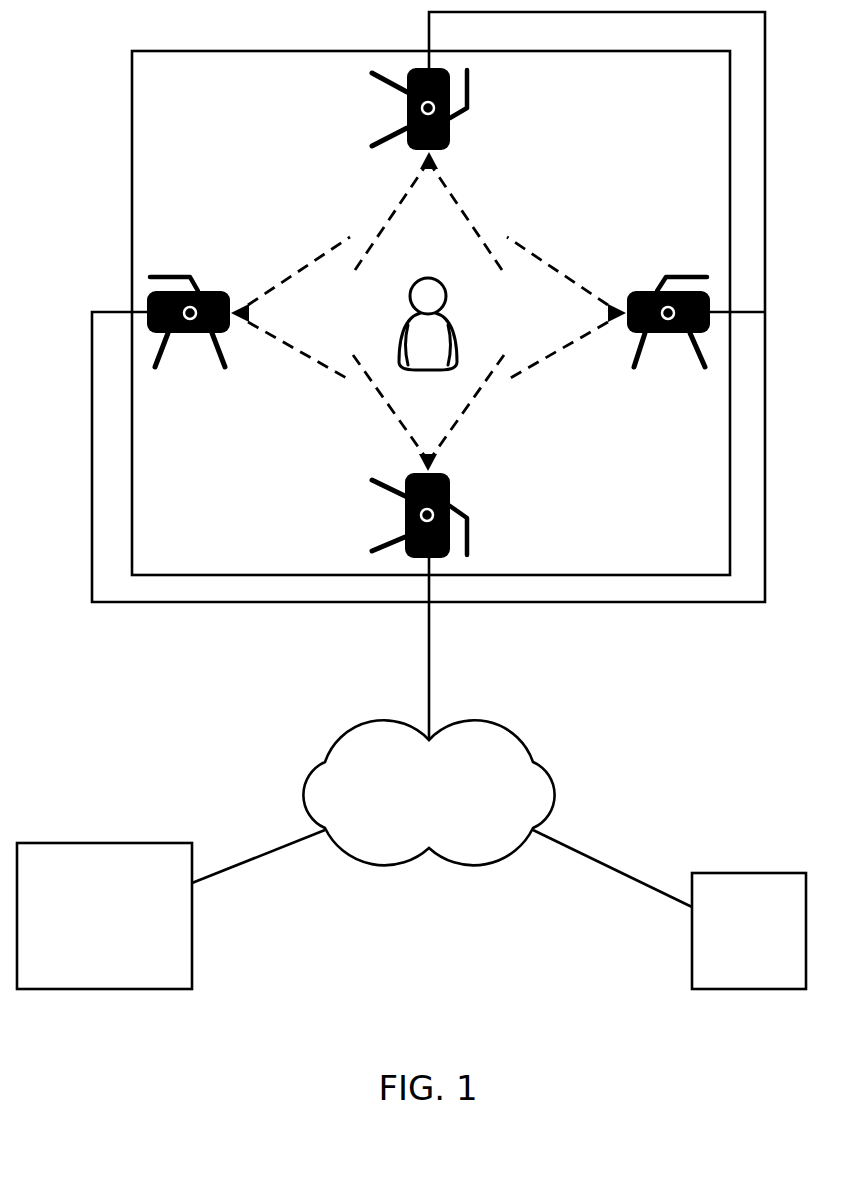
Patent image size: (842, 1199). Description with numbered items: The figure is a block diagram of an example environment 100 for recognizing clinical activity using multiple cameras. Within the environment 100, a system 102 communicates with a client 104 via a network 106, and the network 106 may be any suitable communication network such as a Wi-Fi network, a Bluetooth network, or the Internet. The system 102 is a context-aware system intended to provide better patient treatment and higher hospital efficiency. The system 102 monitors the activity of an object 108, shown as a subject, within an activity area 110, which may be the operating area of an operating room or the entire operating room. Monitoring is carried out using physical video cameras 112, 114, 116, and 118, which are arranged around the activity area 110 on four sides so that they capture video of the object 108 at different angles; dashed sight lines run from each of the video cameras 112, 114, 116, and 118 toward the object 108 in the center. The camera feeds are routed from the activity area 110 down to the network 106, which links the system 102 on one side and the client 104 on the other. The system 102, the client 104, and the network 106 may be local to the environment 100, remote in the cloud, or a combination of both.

The environment 100 is at (410, 1027).
The system 102 is at (104, 916).
The client 104 is at (749, 931).
The network 106 is at (428, 792).
The object 108 is at (458, 320).
The activity area 110 is at (431, 313).
The video camera 112 is at (451, 127).
The video camera 114 is at (648, 292).
The video camera 116 is at (451, 490).
The video camera 118 is at (213, 290).